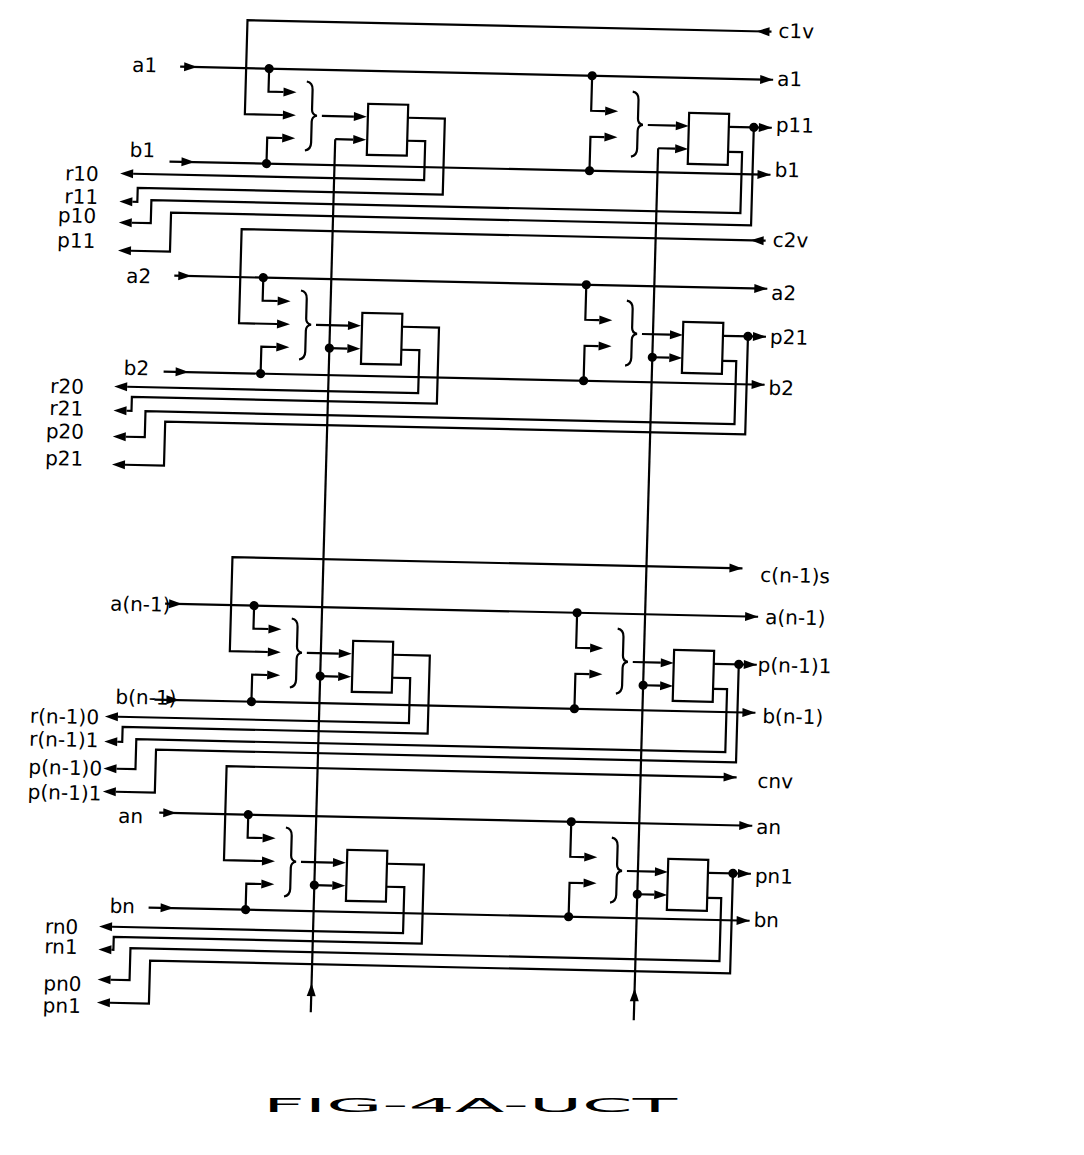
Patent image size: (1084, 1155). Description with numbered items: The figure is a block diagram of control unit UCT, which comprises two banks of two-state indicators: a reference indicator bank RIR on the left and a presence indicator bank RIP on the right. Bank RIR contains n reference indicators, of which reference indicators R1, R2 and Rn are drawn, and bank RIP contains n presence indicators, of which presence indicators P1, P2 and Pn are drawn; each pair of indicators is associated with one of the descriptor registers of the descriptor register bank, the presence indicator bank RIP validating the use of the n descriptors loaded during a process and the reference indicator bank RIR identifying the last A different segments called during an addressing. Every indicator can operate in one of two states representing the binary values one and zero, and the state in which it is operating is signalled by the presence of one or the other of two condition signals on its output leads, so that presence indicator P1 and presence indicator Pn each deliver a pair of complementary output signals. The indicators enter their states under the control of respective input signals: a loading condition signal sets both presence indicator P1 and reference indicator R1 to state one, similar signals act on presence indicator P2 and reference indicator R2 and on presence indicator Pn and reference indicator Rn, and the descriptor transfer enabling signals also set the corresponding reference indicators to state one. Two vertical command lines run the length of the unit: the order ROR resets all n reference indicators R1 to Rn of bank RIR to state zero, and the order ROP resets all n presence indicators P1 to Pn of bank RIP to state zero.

The reference indicator R1 is at (388, 131).
The reference indicator R2 is at (382, 340).
The reference indicator Rn is at (366, 877).
The presence indicator P1 is at (709, 140).
The presence indicator P2 is at (703, 349).
The presence indicator Pn is at (687, 886).
The order ROR is at (333, 595).
The order ROP is at (662, 601).
The reference indicator bank RIR is at (405, 960).
The presence indicator bank RIP is at (737, 960).